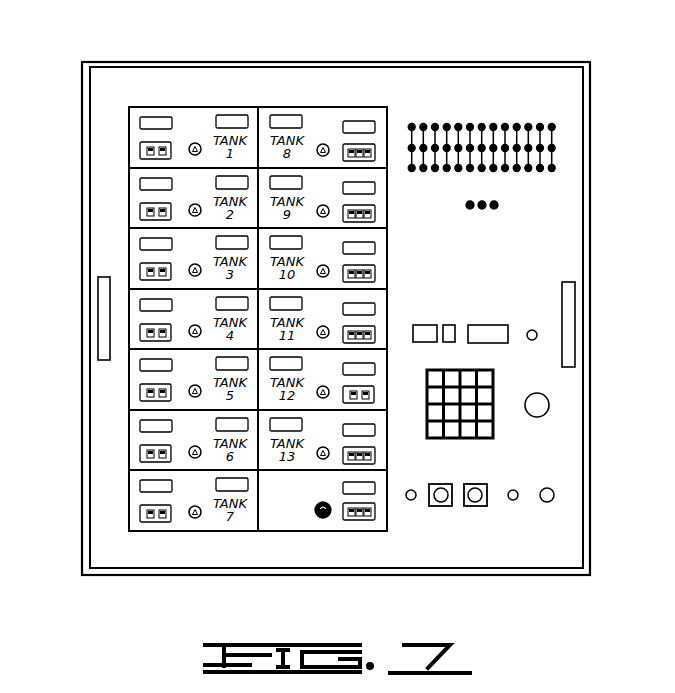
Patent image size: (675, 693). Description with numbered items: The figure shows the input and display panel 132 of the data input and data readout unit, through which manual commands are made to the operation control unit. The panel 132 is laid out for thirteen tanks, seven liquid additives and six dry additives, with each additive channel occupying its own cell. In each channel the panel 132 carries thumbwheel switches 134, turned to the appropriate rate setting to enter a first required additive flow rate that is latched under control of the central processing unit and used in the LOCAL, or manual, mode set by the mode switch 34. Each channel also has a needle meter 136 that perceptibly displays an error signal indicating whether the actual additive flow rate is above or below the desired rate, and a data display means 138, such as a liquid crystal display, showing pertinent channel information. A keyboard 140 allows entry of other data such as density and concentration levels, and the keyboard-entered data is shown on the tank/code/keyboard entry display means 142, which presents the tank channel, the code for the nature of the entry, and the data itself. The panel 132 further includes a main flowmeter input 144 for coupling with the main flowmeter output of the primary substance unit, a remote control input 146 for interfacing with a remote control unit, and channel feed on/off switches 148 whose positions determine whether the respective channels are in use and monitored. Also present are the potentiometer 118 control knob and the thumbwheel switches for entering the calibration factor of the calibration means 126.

The input and display panel 132 is at (340, 87).
The thumbwheel switches 134 is at (145, 150).
The needle meter 136 is at (155, 117).
The data display means 138 is at (237, 115).
The tank/code/keyboard entry display means 142 is at (460, 315).
The keyboard 140 is at (493, 385).
The mode switch 34 is at (543, 398).
The main flowmeter input 144 is at (441, 497).
The remote control input 146 is at (475, 497).
The channel feed on/off switches 148 is at (192, 518).
The potentiometer control knob 118 is at (319, 519).
The calibration means 126 is at (346, 521).